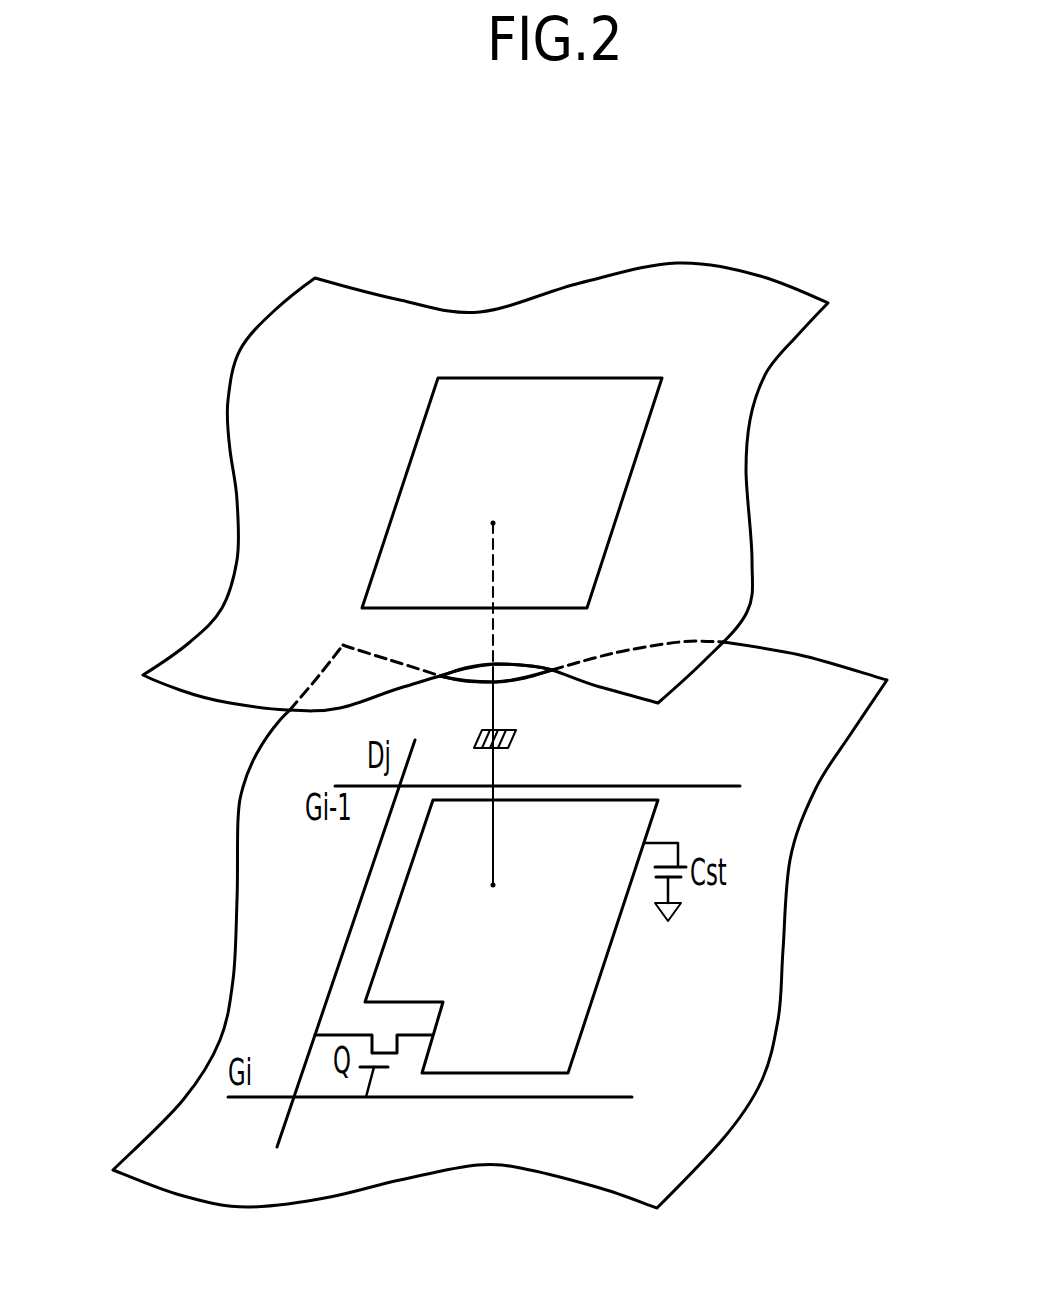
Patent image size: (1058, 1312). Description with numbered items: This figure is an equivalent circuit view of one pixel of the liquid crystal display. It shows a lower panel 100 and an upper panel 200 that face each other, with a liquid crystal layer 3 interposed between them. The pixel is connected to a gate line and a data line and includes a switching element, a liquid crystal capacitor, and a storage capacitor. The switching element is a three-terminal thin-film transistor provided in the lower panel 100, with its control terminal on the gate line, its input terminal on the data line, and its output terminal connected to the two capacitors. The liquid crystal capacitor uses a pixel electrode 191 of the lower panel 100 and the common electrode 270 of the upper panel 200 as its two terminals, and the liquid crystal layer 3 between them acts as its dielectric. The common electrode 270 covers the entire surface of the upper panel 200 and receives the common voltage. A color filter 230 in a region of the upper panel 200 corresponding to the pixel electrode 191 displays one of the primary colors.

The liquid crystal layer 3 is at (146, 806).
The lower panel 100 is at (788, 887).
The pixel electrode 191 is at (593, 990).
The upper panel 200 is at (755, 544).
The color filter 230 is at (610, 540).
The common electrode 270 is at (748, 420).